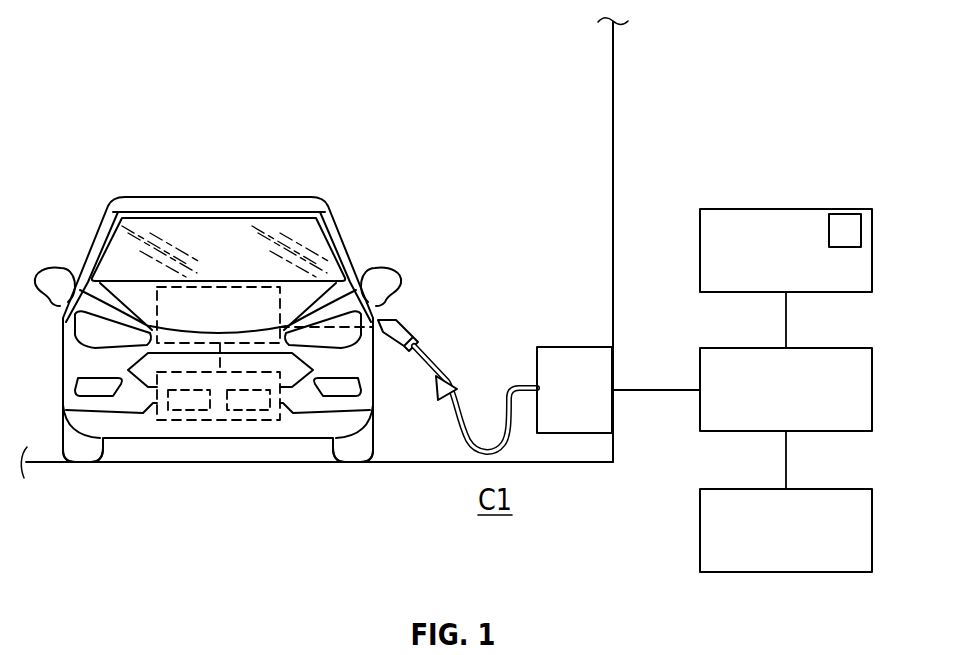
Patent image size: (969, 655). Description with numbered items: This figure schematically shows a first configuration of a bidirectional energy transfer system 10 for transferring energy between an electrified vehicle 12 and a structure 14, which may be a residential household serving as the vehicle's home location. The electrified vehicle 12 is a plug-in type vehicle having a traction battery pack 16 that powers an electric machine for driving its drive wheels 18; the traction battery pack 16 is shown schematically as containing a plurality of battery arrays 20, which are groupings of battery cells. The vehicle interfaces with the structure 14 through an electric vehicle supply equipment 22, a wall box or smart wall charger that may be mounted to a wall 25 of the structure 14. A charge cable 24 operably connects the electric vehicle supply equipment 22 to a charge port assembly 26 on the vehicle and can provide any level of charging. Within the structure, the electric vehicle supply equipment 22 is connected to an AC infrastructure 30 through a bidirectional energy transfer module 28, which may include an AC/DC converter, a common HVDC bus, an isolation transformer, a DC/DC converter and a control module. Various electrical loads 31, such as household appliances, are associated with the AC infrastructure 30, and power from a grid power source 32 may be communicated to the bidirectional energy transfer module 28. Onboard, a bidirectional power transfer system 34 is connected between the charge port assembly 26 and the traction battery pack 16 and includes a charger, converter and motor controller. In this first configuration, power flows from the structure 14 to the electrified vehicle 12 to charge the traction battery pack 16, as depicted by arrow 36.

The bidirectional energy transfer system 10 is at (152, 44).
The electrified vehicle 12 is at (228, 158).
The structure 14 is at (607, 132).
The traction battery pack 16 is at (202, 422).
The drive wheels 18 is at (83, 455).
The battery arrays 20 is at (173, 412).
The electric vehicle supply equipment 22 is at (563, 347).
The charge cable 24 is at (468, 444).
The wall 25 is at (610, 200).
The charge port assembly 26 is at (400, 305).
The bidirectional energy transfer module 28 is at (752, 348).
The AC infrastructure 30 is at (752, 209).
The electrical loads 31 is at (845, 214).
The grid power source 32 is at (752, 489).
The bidirectional power transfer system 34 is at (210, 287).
The arrow 36 is at (461, 380).